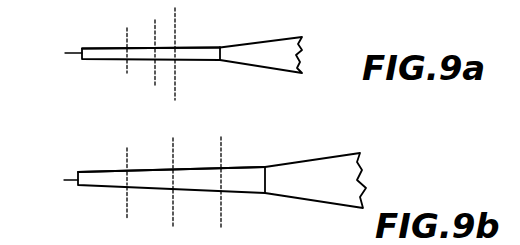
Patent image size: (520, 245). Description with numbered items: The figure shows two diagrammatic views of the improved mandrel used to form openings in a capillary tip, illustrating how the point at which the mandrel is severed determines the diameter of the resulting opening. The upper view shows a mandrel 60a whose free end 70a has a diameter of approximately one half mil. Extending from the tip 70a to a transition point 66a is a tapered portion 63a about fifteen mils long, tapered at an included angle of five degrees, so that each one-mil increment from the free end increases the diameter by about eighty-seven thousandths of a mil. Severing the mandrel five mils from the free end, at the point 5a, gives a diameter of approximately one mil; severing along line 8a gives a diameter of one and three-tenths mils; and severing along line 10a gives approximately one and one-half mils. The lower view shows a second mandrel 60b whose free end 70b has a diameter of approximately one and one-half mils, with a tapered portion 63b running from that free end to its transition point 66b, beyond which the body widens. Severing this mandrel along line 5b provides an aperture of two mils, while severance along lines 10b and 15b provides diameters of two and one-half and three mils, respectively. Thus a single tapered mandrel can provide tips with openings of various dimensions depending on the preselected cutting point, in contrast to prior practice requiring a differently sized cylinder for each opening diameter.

In FIG. 9A, the severance point 5a is at (126, 67).
In FIG. 9A, the severance line 8a is at (155, 78).
In FIG. 9A, the severance line 10a is at (178, 85).
In FIG. 9A, the free end 70a is at (51, 53).
In FIG. 9A, the tapered portion 63a is at (97, 48).
In FIG. 9A, the transition point 66a is at (229, 47).
In FIG. 9A, the mandrel 60a is at (302, 54).
In FIG. 9B, the severance line 5b is at (126, 208).
In FIG. 9B, the severance line 10b is at (172, 208).
In FIG. 9B, the severance line 15b is at (220, 208).
In FIG. 9B, the free end 70b is at (50, 180).
In FIG. 9B, the tapered portion 63b is at (90, 175).
In FIG. 9B, the transition point 66b is at (266, 175).
In FIG. 9B, the mandrel 60b is at (360, 170).